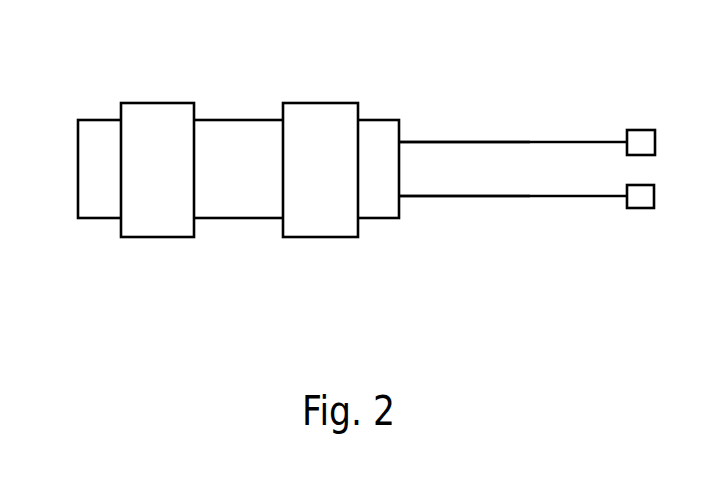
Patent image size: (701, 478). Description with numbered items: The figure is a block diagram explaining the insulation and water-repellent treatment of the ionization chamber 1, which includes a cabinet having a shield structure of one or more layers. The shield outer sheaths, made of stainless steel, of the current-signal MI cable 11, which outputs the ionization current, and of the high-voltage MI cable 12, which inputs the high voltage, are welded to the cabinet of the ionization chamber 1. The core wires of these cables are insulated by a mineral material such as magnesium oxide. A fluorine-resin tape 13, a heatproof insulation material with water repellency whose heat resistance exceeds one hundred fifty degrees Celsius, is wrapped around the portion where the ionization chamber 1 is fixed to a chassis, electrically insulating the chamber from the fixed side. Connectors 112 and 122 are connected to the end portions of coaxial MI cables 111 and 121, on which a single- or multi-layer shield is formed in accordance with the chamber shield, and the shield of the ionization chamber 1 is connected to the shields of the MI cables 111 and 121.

The ionization chamber 1 is at (90, 218).
The fluorine-resin tape 13 is at (155, 102).
The current-signal MI cable 11 is at (535, 137).
The MI cable 111 is at (440, 142).
The connector 112 is at (637, 130).
The high-voltage MI cable 12 is at (549, 202).
The MI cable 121 is at (445, 196).
The connector 122 is at (640, 208).